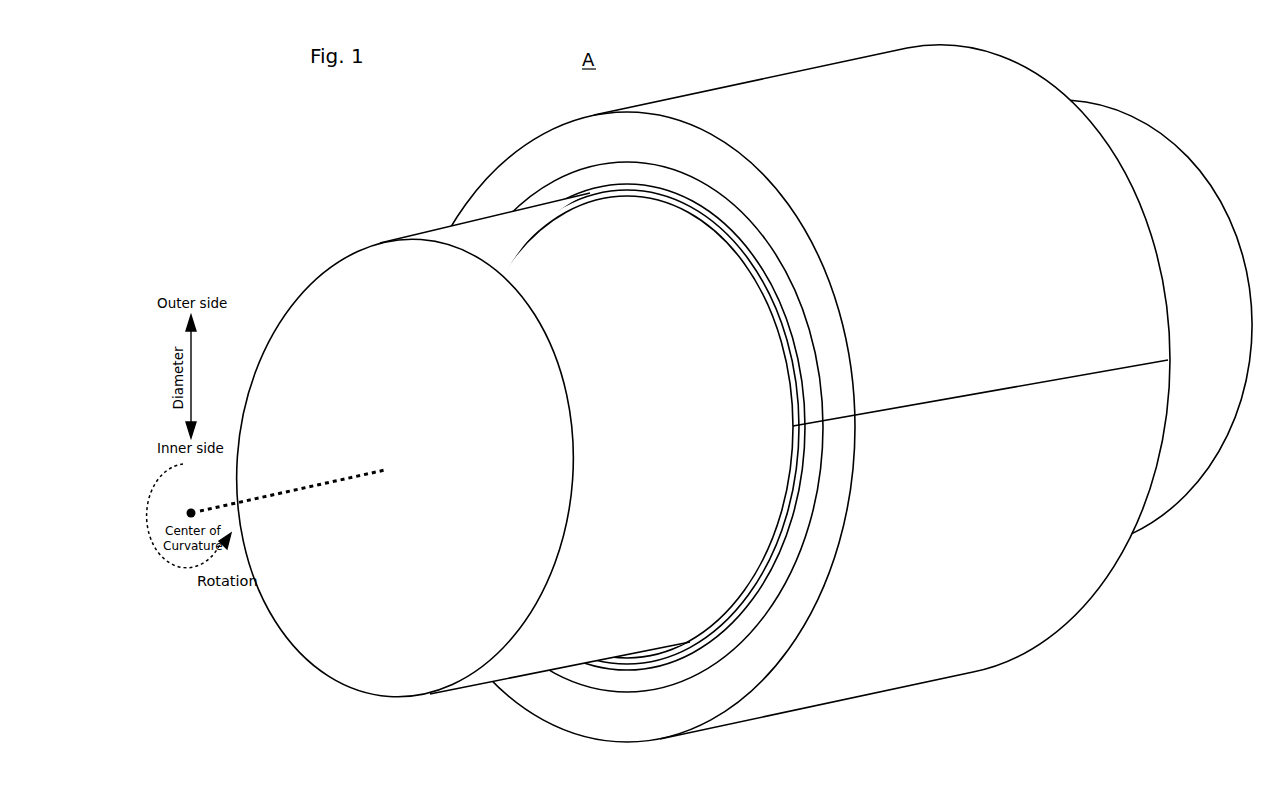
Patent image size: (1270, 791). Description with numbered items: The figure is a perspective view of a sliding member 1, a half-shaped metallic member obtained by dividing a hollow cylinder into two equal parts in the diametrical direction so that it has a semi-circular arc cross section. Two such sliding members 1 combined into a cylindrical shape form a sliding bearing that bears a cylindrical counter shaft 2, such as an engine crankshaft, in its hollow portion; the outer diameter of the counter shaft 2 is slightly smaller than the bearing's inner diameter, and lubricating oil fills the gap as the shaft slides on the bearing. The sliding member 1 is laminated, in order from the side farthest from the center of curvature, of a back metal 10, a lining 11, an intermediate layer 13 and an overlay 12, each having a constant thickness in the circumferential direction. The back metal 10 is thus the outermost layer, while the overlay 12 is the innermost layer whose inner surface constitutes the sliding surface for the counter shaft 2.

The sliding member 1 is at (717, 88).
The counter shaft 2 is at (327, 265).
The back metal 10 is at (603, 135).
The lining 11 is at (591, 181).
The overlay 12 is at (587, 193).
The intermediate layer 13 is at (652, 187).